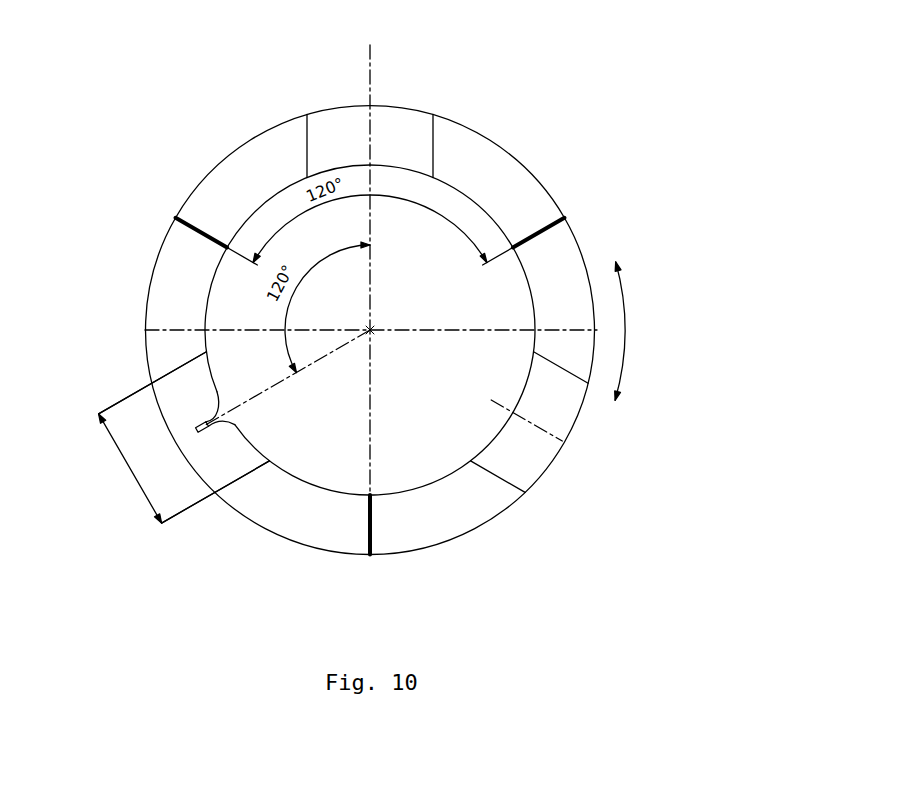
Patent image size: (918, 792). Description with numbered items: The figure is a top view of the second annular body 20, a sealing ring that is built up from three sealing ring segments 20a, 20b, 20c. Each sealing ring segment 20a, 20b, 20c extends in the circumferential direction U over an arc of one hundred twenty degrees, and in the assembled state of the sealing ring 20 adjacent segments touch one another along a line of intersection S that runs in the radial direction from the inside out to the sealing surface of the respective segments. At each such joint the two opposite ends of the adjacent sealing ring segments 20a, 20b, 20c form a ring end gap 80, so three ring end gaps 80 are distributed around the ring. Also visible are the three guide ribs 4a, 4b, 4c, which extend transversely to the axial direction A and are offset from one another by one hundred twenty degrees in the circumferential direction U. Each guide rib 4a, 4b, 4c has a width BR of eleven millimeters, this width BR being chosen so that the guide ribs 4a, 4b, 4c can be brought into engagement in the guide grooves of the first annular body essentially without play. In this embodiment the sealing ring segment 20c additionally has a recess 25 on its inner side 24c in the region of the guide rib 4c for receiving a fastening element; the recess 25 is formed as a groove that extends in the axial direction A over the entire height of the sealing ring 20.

The second annular body 20 is at (258, 95).
The sealing ring segment 20a is at (522, 163).
The sealing ring segment 20b is at (492, 522).
The sealing ring segment 20c is at (266, 534).
The guide rib 4a is at (400, 125).
The guide rib 4b is at (557, 413).
The guide rib 4c is at (190, 402).
The inner side 24c is at (258, 452).
The recess 25 is at (197, 434).
The ring end gap 80 is at (185, 214).
The line of intersection S is at (367, 393).
The axial direction A is at (372, 328).
The circumferential direction U is at (635, 331).
The width of the guide ribs BR is at (129, 468).